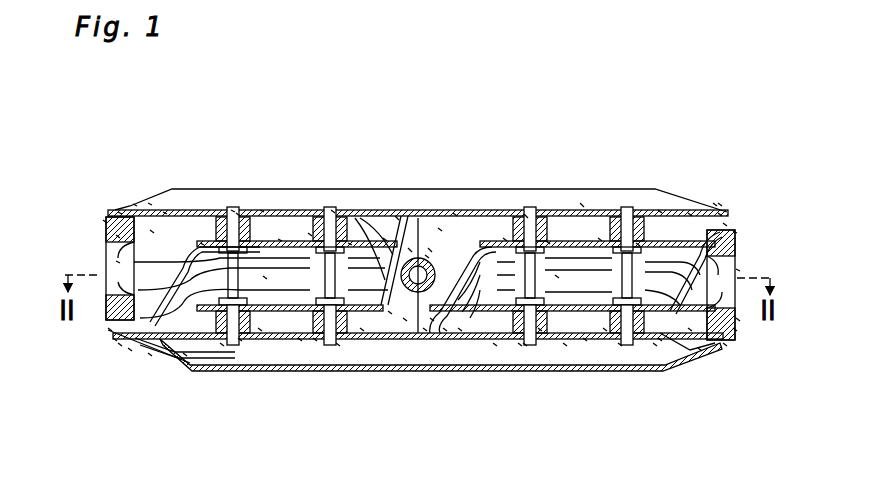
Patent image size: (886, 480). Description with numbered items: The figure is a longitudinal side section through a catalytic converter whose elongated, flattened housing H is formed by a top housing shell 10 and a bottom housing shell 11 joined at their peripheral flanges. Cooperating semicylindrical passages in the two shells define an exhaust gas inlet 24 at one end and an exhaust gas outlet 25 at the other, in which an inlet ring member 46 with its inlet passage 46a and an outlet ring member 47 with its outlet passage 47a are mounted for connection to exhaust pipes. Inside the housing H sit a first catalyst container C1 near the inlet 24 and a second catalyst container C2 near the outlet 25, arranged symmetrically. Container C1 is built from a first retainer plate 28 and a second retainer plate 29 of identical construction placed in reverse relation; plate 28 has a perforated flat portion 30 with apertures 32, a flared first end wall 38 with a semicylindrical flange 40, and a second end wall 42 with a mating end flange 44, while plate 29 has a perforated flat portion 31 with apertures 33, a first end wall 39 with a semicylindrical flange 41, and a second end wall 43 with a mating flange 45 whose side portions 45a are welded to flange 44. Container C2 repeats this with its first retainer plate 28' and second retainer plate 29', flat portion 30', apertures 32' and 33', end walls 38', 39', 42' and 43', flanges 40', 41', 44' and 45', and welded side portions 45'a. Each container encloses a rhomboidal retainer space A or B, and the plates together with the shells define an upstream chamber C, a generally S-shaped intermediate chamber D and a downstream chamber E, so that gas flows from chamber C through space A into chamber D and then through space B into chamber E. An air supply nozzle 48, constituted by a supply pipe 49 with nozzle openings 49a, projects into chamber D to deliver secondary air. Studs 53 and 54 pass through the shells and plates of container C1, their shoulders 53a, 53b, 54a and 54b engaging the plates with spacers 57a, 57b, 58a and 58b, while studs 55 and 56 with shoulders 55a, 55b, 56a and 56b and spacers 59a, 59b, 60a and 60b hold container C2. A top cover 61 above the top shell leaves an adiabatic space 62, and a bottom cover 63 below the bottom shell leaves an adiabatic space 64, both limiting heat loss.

The top housing shell 10 is at (135, 205).
The bottom housing shell 11 is at (150, 355).
The exhaust gas inlet 24 is at (118, 262).
The exhaust gas outlet 25 is at (738, 320).
The first retainer plate 28 is at (266, 138).
The first retainer plate 28' is at (598, 409).
The second retainer plate 29 is at (218, 395).
The second retainer plate 29' is at (600, 135).
The flat portion 30 is at (169, 156).
The flat portion 30' is at (710, 376).
The flat portion 31 is at (505, 240).
The apertures 32 is at (291, 169).
The apertures 32' is at (625, 390).
The apertures 33 is at (277, 395).
The apertures 33' is at (614, 188).
The first end wall 38 is at (90, 156).
The first end wall 38' is at (759, 382).
The first end wall 39 is at (86, 400).
The first end wall 39' is at (756, 166).
The semicylindrical flange 40 is at (78, 362).
The semicylindrical flange 40' is at (761, 207).
The semicylindrical flange 41 is at (81, 380).
The semicylindrical flange 41' is at (756, 187).
The second end wall 42 is at (382, 188).
The second end wall 42' is at (482, 390).
The second end wall 43 is at (360, 374).
The second end wall 43' is at (462, 374).
The mating end flange 44 is at (387, 142).
The mating end flange 44' is at (430, 385).
The mating flange 45 is at (418, 175).
The mating flange 45' is at (412, 369).
The side portions of flange 45a is at (430, 248).
The side portions of flange 45'a is at (432, 404).
The inlet ring member 46 is at (152, 231).
The inlet passage 46a is at (118, 236).
The outlet ring member 47 is at (735, 330).
The outlet passage 47a is at (738, 270).
The air supply nozzle 48 is at (440, 230).
The supply pipe 49 is at (427, 256).
The nozzle openings 49a is at (455, 214).
The stud 53 is at (233, 210).
The shoulder 53a is at (238, 214).
The shoulder 53b is at (222, 345).
The stud 54 is at (333, 211).
The shoulder 54a is at (350, 244).
The shoulder 54b is at (338, 345).
The stud 55 is at (565, 345).
The shoulder 55a is at (548, 242).
The shoulder 55b is at (540, 330).
The stud 56 is at (655, 345).
The shoulder 56a is at (638, 244).
The shoulder 56b is at (660, 340).
The spacer 57a is at (202, 243).
The spacer 57b is at (185, 355).
The spacer 58a is at (310, 234).
The spacer 58b is at (315, 340).
The spacer 59a is at (526, 215).
The spacer 59b is at (520, 345).
The spacer 60a is at (660, 212).
The spacer 60b is at (620, 345).
The top cover 61 is at (720, 205).
The adiabatic space 62 is at (690, 214).
The bottom cover 63 is at (525, 345).
The adiabatic space 64 is at (495, 345).
The retainer space A is at (265, 278).
The retainer space B is at (557, 276).
The upstream chamber C is at (103, 221).
The first catalyst container C1 is at (110, 330).
The second catalyst container C2 is at (735, 232).
The S-shaped intermediate chamber D is at (390, 313).
The downstream chamber E is at (700, 350).
The housing H is at (150, 203).